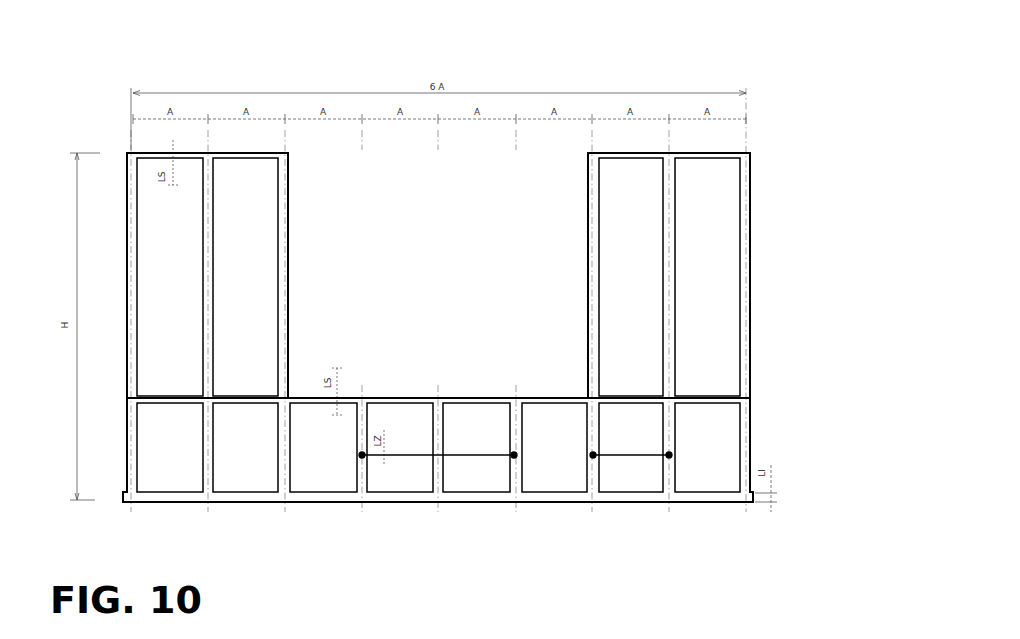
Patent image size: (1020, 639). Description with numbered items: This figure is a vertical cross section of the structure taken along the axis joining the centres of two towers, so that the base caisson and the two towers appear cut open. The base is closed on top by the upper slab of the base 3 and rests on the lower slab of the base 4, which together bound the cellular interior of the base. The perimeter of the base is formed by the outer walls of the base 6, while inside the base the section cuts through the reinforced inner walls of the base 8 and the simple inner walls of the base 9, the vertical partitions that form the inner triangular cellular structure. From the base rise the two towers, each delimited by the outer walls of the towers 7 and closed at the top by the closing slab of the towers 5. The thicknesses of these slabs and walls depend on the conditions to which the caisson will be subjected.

The upper slab of the base 3 is at (481, 400).
The lower slab of the base 4 is at (638, 497).
The closing slab of the towers 5 is at (700, 154).
The outer walls of the base 6 is at (744, 440).
The outer walls of the towers 7 is at (745, 266).
The reinforced inner walls of the base 8 is at (593, 455).
The simple inner walls of the base 9 is at (438, 455).